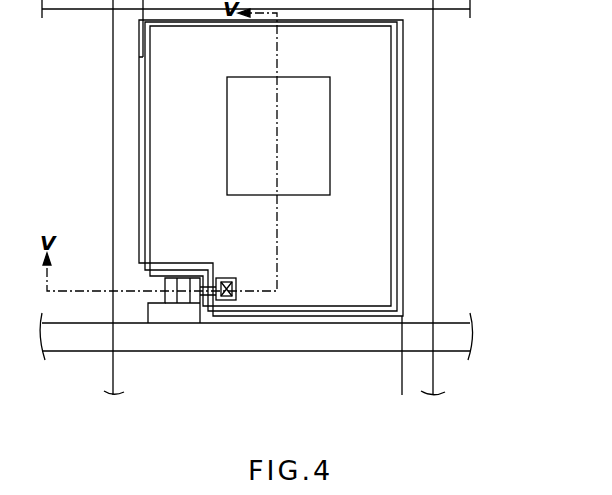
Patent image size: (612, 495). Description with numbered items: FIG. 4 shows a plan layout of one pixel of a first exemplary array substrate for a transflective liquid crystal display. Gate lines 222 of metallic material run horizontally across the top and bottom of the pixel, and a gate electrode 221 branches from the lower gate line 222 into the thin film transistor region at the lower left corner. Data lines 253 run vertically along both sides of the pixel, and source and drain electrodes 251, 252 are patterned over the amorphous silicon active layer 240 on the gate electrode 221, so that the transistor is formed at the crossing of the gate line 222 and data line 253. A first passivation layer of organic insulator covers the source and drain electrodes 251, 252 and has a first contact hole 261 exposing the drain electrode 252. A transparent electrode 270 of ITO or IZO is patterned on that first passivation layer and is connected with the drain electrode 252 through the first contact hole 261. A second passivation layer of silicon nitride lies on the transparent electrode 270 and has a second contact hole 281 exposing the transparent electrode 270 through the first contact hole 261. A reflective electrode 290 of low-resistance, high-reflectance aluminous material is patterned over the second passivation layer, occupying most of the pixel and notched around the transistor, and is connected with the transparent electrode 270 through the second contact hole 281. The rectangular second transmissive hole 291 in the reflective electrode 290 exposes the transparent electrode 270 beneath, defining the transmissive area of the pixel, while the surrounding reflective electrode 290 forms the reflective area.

The gate electrode 221 is at (178, 272).
The gate line 222 is at (357, 12).
The active layer 240 is at (188, 304).
The source electrode 251 is at (167, 304).
The drain electrode 252 is at (200, 298).
The data line 253 is at (113, 95).
The first contact hole 261 is at (237, 292).
The transparent electrode 270 is at (150, 152).
The second contact hole 281 is at (228, 279).
The reflective electrode 290 is at (143, 56).
The second transmissive hole 291 is at (317, 196).